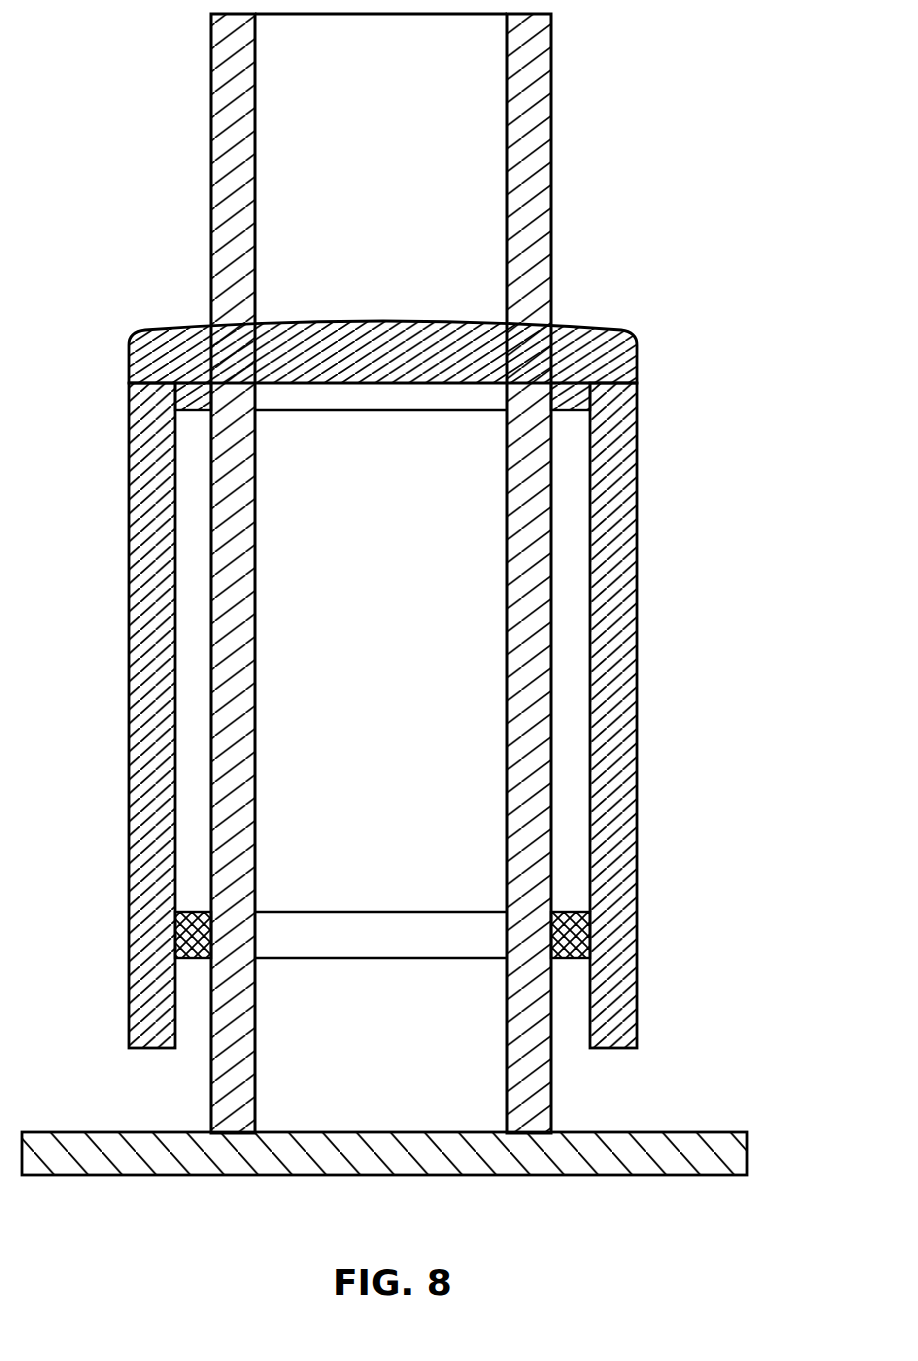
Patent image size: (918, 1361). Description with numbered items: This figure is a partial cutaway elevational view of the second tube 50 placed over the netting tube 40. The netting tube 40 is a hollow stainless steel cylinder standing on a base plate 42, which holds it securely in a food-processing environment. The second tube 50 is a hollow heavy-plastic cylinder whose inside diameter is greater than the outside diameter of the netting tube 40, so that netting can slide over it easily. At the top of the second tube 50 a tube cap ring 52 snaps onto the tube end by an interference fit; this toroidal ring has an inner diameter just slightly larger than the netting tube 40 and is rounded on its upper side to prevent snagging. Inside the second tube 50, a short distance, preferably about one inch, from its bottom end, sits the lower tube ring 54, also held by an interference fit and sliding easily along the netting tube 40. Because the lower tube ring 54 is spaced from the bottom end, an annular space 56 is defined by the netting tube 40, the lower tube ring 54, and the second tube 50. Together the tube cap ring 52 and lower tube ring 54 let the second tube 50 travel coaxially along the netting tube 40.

The netting tube 40 is at (551, 186).
The base plate 42 is at (100, 1177).
The second tube 50 is at (146, 624).
The tube cap ring 52 is at (165, 362).
The lower tube ring 54 is at (188, 933).
The annular space 56 is at (197, 1040).